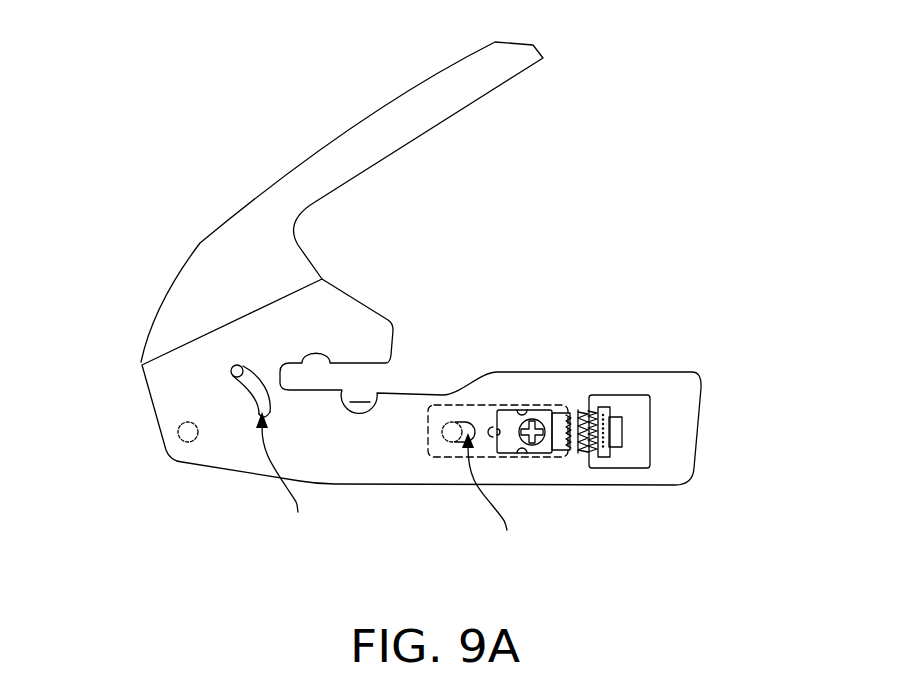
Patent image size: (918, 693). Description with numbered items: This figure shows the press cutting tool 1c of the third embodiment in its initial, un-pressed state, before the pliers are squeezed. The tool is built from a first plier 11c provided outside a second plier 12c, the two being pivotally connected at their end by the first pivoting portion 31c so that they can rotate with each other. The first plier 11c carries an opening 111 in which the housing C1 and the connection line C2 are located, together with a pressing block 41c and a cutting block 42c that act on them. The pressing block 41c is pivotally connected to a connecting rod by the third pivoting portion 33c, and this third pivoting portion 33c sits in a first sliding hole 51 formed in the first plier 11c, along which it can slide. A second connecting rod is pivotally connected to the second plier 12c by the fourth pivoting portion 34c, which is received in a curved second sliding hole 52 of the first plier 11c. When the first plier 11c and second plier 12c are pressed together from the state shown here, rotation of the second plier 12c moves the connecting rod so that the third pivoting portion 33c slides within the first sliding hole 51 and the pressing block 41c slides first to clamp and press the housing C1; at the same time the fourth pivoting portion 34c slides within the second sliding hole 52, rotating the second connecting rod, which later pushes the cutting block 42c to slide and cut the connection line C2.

The press cutting tool 1c is at (457, 262).
The second plier 12c is at (478, 99).
The first plier 11c is at (683, 443).
The fourth pivoting portion 34c is at (235, 366).
The second sliding hole 52 is at (282, 478).
The first pivoting portion 31c is at (178, 433).
The pressing block 41c is at (486, 413).
The third pivoting portion 33c is at (448, 436).
The first sliding hole 51 is at (491, 496).
The cutting block 42c is at (558, 443).
The housing C1 is at (590, 410).
The connection line C2 is at (610, 389).
The opening 111 is at (600, 395).